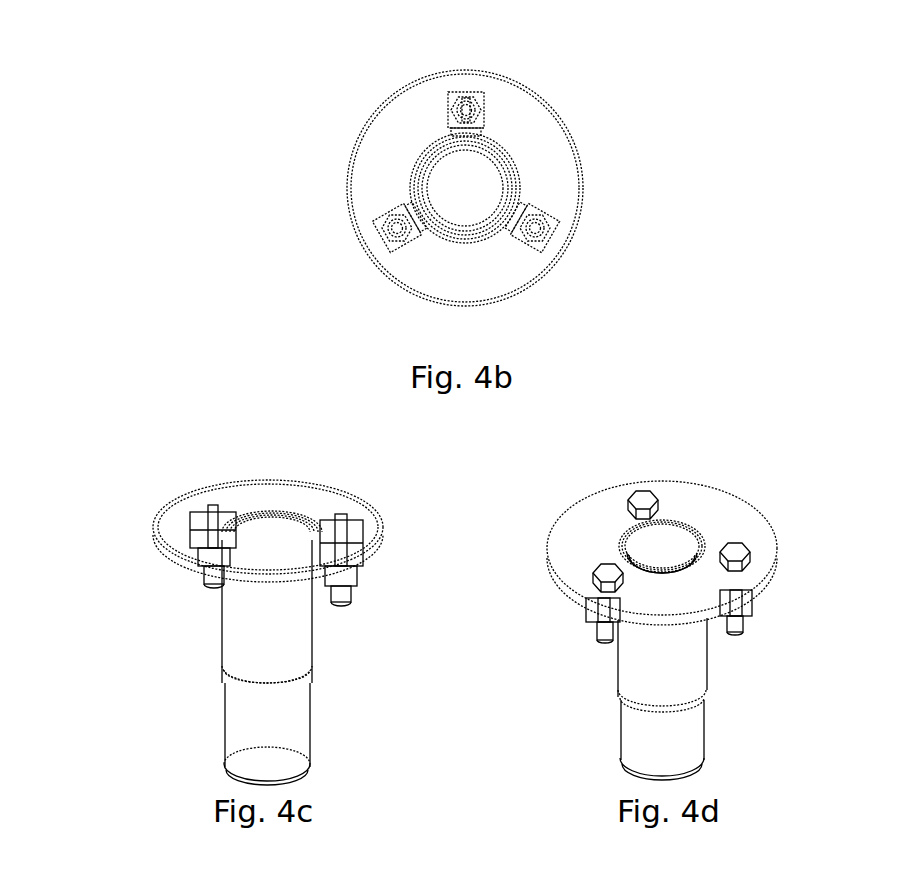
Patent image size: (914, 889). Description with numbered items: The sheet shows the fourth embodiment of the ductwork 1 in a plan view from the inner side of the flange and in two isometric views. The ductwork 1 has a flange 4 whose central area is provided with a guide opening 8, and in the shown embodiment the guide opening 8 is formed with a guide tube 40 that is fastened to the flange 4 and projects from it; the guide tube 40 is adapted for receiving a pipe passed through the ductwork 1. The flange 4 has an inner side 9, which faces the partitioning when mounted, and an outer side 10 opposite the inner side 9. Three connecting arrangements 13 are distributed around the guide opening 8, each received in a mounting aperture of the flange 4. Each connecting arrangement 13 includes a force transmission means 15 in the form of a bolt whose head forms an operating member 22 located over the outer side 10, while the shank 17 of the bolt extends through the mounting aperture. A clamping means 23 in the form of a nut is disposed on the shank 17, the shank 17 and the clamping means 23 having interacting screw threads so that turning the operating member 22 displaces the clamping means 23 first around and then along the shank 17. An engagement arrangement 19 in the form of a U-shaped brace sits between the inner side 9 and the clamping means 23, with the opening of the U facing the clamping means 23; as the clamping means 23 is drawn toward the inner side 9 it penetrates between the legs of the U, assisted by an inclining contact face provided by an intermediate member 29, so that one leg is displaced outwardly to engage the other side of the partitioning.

In FIG. 4B, the ductwork 1 is at (316, 98).
In FIG. 4C, the ductwork 1 is at (187, 394).
In FIG. 4D, the ductwork 1 is at (707, 408).
In FIG. 4B, the flange 4 is at (388, 128).
In FIG. 4C, the flange 4 is at (200, 493).
In FIG. 4D, the flange 4 is at (569, 530).
In FIG. 4B, the guide opening 8 is at (474, 171).
In FIG. 4C, the guide opening 8 is at (280, 462).
In FIG. 4B, the inner side 9 is at (493, 282).
In FIG. 4C, the inner side 9 is at (376, 522).
In FIG. 4D, the outer side 10 is at (716, 510).
In FIG. 4B, the connecting arrangement 13 is at (465, 74).
In FIG. 4C, the connecting arrangement 13 is at (180, 582).
In FIG. 4D, the connecting arrangement 13 is at (567, 644).
In FIG. 4B, the force transmission means 15 is at (754, 21).
In FIG. 4B, the shank 17 is at (777, 21).
In FIG. 4B, the engagement arrangement 19 is at (512, 78).
In FIG. 4C, the engagement arrangement 19 is at (195, 522).
In FIG. 4D, the engagement arrangement 19 is at (587, 607).
In FIG. 4D, the operating member 22 is at (628, 500).
In FIG. 4B, the clamping means 23 is at (447, 110).
In FIG. 4C, the clamping means 23 is at (215, 562).
In FIG. 4B, the intermediate member 29 is at (152, 0).
In FIG. 4C, the guide tube 40 is at (242, 714).
In FIG. 4D, the guide tube 40 is at (660, 747).